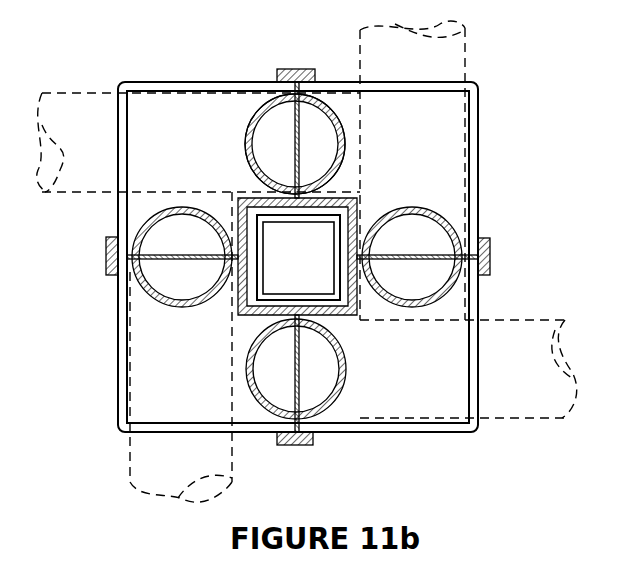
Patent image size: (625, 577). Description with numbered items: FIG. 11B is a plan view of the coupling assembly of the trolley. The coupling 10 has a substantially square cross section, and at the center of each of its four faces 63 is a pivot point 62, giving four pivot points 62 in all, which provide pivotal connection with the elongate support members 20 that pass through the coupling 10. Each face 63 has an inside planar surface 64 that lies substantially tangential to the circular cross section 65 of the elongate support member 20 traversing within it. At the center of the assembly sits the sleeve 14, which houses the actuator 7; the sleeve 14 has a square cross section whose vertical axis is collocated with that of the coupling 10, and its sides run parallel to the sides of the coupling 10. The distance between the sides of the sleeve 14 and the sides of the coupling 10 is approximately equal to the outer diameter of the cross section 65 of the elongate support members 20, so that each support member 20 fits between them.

The coupling 10 is at (487, 82).
The actuator 7 is at (333, 266).
The sleeve 14 is at (358, 197).
The elongated support members 20 is at (243, 132).
The pivot points 62 is at (490, 245).
The faces 63 is at (474, 193).
The inside planar surface 64 is at (132, 298).
The circular cross section 65 is at (346, 136).